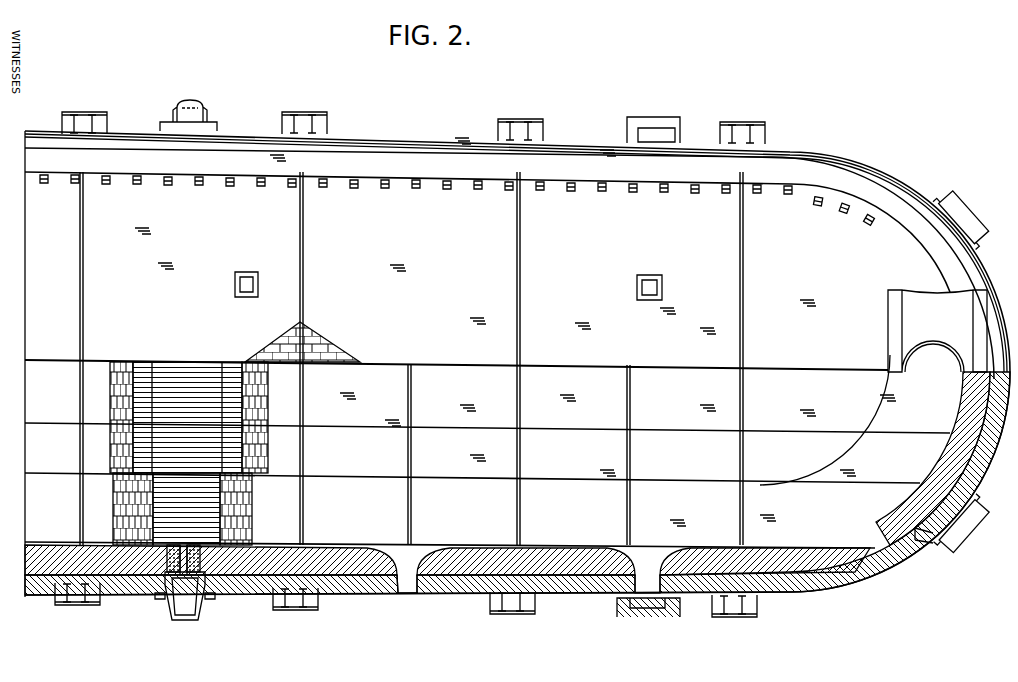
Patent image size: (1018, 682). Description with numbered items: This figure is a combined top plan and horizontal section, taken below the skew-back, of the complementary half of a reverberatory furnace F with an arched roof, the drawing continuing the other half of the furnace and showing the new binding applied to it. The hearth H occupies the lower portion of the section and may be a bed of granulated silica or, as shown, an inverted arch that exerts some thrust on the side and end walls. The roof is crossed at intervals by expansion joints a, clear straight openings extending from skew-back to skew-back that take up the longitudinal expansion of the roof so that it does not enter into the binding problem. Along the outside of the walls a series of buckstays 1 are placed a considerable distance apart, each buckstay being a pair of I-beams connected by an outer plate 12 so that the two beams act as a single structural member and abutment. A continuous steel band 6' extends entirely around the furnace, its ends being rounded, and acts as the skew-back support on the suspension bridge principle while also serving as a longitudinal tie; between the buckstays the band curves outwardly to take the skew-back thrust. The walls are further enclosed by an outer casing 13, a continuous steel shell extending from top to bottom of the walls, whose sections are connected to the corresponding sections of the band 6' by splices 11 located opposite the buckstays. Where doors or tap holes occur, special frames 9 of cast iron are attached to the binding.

The buckstays 1 is at (76, 117).
The outer plate 12 is at (86, 122).
The special frames 9 is at (170, 121).
The outer casing 13 is at (235, 135).
The skew-back support band 6' is at (516, 232).
The splices 11 is at (266, 137).
The reverberatory furnace F is at (422, 190).
The expansion joints a is at (85, 312).
The hearth H is at (388, 375).